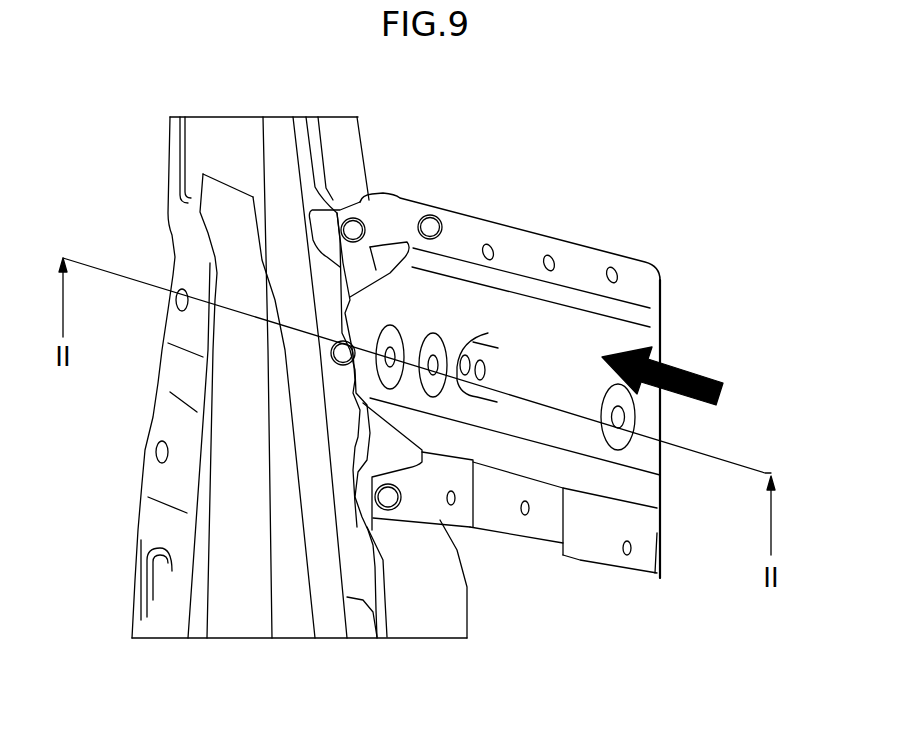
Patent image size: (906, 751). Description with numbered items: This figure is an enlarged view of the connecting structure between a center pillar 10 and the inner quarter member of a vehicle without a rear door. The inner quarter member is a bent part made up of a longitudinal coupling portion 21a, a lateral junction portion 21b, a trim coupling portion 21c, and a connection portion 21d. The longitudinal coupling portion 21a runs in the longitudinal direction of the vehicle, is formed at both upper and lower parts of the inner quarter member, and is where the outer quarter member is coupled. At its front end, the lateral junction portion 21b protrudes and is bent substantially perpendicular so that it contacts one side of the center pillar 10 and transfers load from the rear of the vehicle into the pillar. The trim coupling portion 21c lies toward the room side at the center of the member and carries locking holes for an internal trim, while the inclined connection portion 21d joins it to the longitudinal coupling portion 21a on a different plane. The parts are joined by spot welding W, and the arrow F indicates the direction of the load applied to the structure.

The center pillar 10 is at (163, 243).
The longitudinal coupling portion 21a is at (520, 252).
The lateral junction portion 21b is at (383, 223).
The trim coupling portion 21c is at (650, 413).
The connection portion 21d is at (625, 333).
The spot welding W is at (353, 230).
The load direction F is at (674, 381).